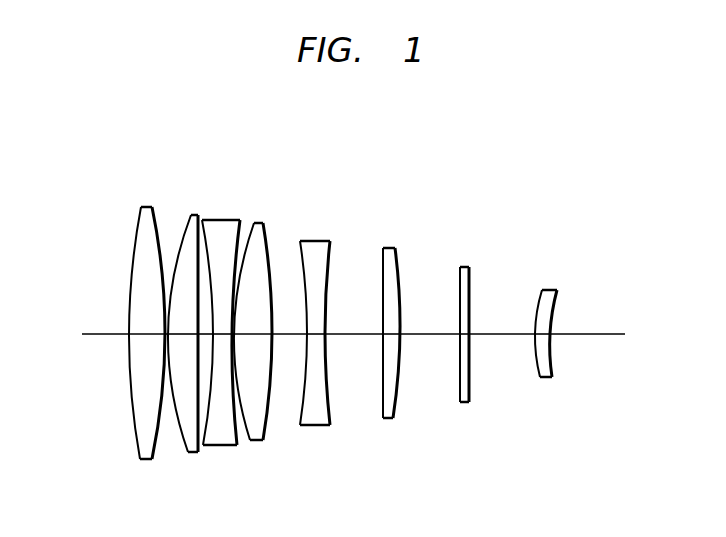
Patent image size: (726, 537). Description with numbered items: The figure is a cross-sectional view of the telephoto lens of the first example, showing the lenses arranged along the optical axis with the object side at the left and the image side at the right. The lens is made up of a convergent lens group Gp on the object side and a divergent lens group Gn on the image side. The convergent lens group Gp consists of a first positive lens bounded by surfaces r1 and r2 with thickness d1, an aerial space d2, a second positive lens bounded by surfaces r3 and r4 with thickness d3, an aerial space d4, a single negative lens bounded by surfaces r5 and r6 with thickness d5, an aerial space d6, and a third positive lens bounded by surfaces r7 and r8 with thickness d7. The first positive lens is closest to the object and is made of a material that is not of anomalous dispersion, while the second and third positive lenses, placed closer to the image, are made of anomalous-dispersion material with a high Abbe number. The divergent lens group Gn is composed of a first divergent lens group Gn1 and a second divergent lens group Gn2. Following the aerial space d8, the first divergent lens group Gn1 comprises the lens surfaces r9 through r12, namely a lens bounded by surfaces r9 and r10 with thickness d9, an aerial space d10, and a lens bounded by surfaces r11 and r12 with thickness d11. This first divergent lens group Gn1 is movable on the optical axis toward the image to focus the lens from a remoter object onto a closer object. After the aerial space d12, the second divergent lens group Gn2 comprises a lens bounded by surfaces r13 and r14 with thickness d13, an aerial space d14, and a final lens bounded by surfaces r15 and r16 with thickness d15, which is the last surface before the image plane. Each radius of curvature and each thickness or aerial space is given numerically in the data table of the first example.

The first lens surface r1 is at (141, 207).
The second lens surface r2 is at (152, 207).
The third lens surface r3 is at (191, 215).
The fourth lens surface r4 is at (198, 215).
The fifth lens surface r5 is at (203, 220).
The sixth lens surface r6 is at (240, 220).
The seventh lens surface r7 is at (254, 223).
The eighth lens surface r8 is at (263, 223).
The ninth lens surface r9 is at (300, 241).
The tenth lens surface r10 is at (330, 241).
The eleventh lens surface r11 is at (383, 248).
The twelfth lens surface r12 is at (395, 248).
The thirteenth lens surface r13 is at (460, 267).
The fourteenth lens surface r14 is at (469, 267).
The fifteenth lens surface r15 is at (542, 290).
The sixteenth lens surface r16 is at (557, 290).
The thickness of the first lens d1 is at (145, 336).
The aerial space between first and second lenses d2 is at (164, 336).
The thickness of the second lens d3 is at (183, 336).
The aerial space between second and third lenses d4 is at (205, 336).
The thickness of the third lens d5 is at (221, 336).
The aerial space between third and fourth lenses d6 is at (233, 336).
The thickness of the fourth lens d7 is at (252, 336).
The aerial space between convergent and divergent groups d8 is at (286, 336).
The thickness of the fifth lens d9 is at (314, 336).
The aerial space between fifth and sixth lenses d10 is at (351, 336).
The thickness of the sixth lens d11 is at (389, 336).
The aerial space between first and second divergent groups d12 is at (425, 336).
The thickness of the seventh lens d13 is at (459, 336).
The aerial space between seventh and eighth lenses d14 is at (498, 336).
The thickness of the eighth lens d15 is at (541, 336).
The convergent lens group Gp is at (215, 303).
The divergent lens group Gn is at (449, 304).
The first divergent lens group Gn1 is at (369, 321).
The second divergent lens group Gn2 is at (513, 321).